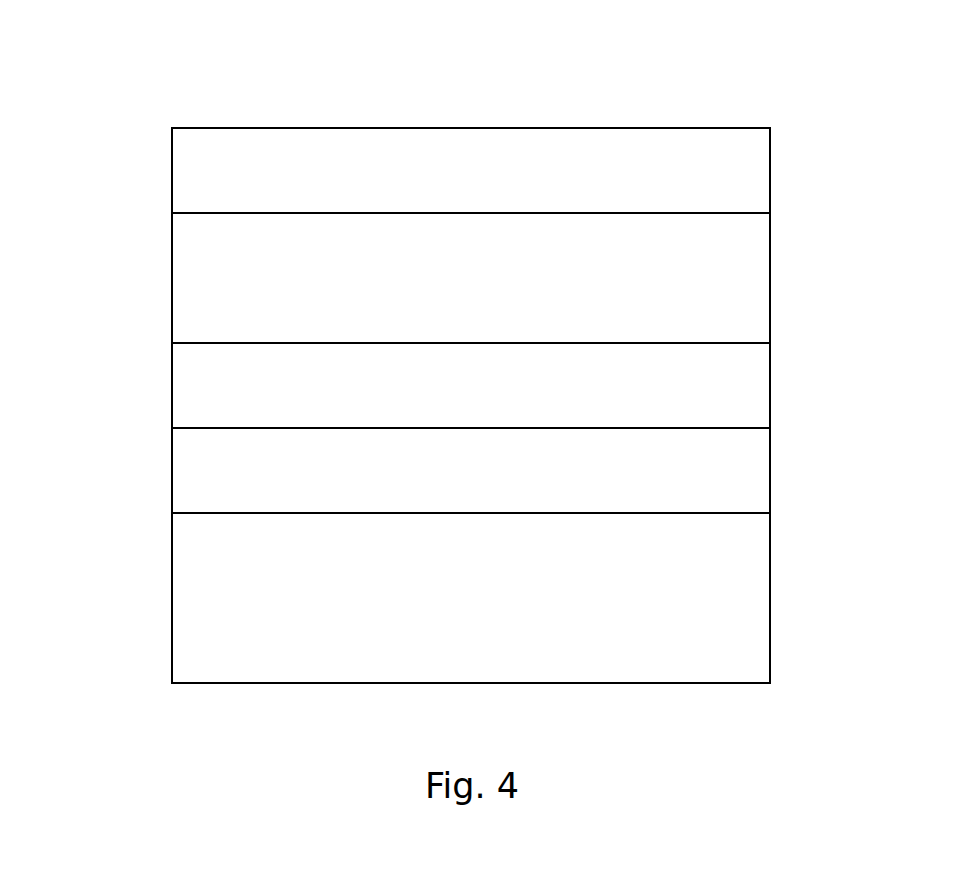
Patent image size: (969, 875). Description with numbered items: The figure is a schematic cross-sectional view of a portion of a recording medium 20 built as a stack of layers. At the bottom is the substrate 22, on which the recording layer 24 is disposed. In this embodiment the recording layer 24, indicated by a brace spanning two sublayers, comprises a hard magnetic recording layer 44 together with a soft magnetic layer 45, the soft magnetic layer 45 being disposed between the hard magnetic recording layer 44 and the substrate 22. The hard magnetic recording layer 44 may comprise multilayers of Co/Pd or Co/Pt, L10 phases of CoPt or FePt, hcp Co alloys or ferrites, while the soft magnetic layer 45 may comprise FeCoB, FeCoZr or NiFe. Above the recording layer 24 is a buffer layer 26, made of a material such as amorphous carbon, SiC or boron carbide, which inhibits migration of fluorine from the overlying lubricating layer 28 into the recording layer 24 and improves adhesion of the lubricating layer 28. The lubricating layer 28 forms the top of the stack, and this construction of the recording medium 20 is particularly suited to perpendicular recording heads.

The recording medium 20 is at (512, 106).
The lubricating layer 28 is at (770, 161).
The buffer layer 26 is at (770, 296).
The hard magnetic recording layer 44 is at (770, 392).
The soft magnetic layer 45 is at (770, 477).
The substrate 22 is at (770, 616).
The recording layer 24 is at (135, 341).